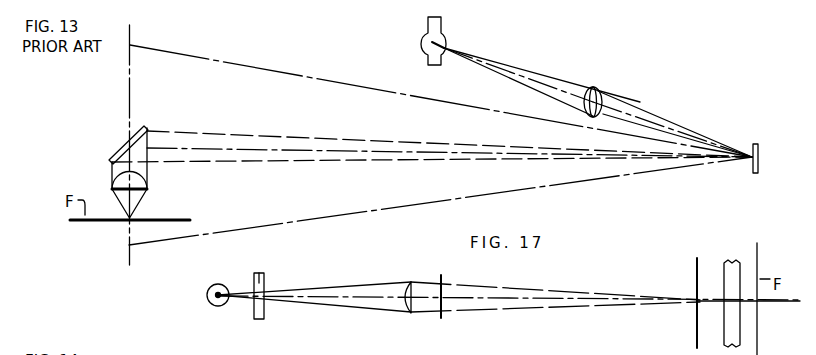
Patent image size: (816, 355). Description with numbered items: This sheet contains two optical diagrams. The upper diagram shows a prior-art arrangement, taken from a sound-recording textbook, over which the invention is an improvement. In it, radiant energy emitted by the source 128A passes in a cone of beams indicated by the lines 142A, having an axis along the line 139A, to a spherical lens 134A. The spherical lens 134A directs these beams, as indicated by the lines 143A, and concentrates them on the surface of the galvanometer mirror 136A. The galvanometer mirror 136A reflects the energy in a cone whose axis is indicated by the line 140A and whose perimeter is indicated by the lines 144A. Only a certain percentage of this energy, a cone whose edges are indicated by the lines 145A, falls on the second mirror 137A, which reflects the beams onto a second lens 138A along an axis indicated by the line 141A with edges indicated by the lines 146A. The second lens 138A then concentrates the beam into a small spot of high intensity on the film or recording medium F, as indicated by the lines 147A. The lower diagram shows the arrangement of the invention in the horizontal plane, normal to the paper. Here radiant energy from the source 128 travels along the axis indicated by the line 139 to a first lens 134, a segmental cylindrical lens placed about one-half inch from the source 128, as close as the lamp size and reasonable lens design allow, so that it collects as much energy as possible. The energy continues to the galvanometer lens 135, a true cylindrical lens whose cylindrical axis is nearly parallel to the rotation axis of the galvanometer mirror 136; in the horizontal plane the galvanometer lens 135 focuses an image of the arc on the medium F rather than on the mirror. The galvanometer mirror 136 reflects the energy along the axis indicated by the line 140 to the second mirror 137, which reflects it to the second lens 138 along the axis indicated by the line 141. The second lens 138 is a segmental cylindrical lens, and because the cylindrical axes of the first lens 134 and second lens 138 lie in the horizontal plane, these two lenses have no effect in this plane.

In FIG. 13, the source 128A is at (424, 32).
In FIG. 13, the spherical lens 134A is at (604, 97).
In FIG. 13, the galvanometer mirror 136A is at (759, 148).
In FIG. 13, the second mirror 137A is at (124, 146).
In FIG. 13, the second lens 138A is at (112, 178).
In FIG. 13, the axis line 139A is at (569, 92).
In FIG. 13, the axis line 140A is at (378, 152).
In FIG. 13, the axis line 141A is at (127, 241).
In FIG. 13, the cone lines 142A is at (549, 76).
In FIG. 13, the beam lines 143A is at (684, 127).
In FIG. 13, the perimeter lines 144A is at (286, 72).
In FIG. 13, the cone edge lines 145A is at (275, 137).
In FIG. 13, the beam edge lines 146A is at (150, 143).
In FIG. 13, the concentration lines 147A is at (145, 193).
In FIG. 17, the source 128 is at (207, 291).
In FIG. 17, the first lens 134 is at (262, 273).
In FIG. 17, the galvanometer lens 135 is at (399, 309).
In FIG. 17, the galvanometer mirror 136 is at (441, 278).
In FIG. 17, the second mirror 137 is at (697, 260).
In FIG. 17, the second lens 138 is at (733, 262).
In FIG. 17, the axis line 139 is at (362, 295).
In FIG. 17, the axis line 140 is at (544, 298).
In FIG. 17, the axis line 141 is at (712, 300).